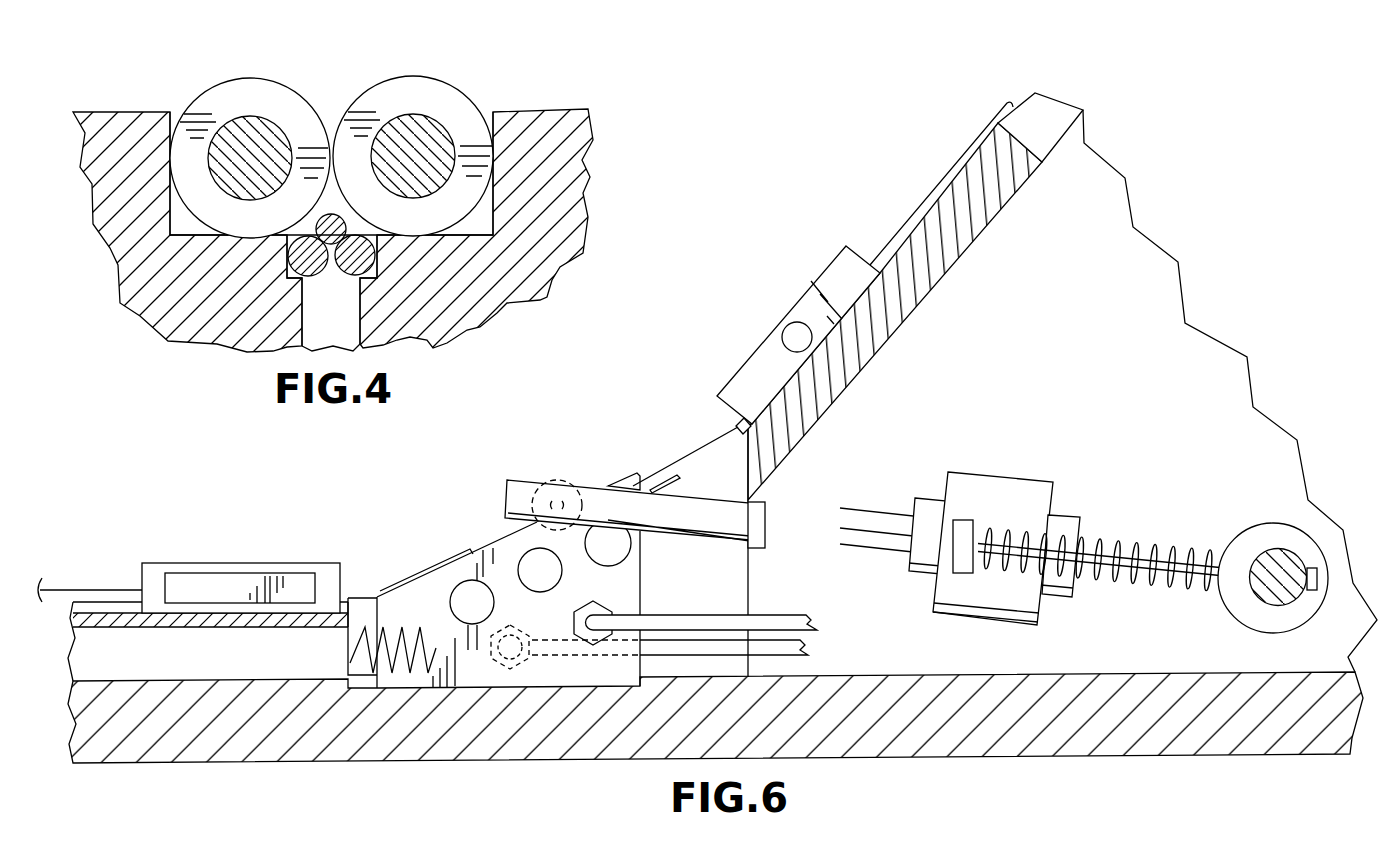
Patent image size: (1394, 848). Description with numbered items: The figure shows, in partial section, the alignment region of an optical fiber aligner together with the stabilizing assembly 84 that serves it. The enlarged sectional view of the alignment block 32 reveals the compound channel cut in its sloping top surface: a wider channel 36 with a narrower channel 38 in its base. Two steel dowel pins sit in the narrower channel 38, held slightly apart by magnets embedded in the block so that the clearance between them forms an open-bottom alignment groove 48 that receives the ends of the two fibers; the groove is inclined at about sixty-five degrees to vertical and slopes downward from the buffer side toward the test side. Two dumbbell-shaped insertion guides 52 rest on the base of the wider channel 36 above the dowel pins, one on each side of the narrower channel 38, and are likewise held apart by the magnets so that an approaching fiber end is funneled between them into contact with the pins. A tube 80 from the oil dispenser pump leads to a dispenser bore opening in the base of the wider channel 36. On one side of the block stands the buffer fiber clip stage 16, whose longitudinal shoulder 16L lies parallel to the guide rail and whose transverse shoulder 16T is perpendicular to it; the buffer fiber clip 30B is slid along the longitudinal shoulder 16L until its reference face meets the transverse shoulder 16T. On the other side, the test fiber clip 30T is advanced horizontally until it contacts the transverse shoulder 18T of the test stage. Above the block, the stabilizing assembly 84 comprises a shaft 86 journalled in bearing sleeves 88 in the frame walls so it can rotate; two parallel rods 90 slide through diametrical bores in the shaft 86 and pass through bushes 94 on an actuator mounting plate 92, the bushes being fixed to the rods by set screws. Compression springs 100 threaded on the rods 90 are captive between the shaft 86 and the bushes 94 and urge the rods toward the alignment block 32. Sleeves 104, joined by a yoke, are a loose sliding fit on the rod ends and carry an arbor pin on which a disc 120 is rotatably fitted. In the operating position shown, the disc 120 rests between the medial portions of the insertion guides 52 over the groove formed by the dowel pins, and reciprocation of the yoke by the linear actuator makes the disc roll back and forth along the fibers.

In FIG. 4, the alignment block 32 is at (562, 101).
In FIG. 4, the wider channel 36 is at (477, 100).
In FIG. 4, the insertion guides 52 is at (205, 75).
In FIG. 4, the narrower channel 38 is at (359, 226).
In FIG. 4, the alignment groove 48 is at (324, 238).
In FIG. 6, the buffer fiber clip stage 16 is at (1038, 100).
In FIG. 6, the longitudinal shoulder 16L is at (938, 154).
In FIG. 6, the transverse shoulder 16T is at (730, 420).
In FIG. 6, the buffer fiber clip 30B is at (814, 266).
In FIG. 6, the transverse shoulder 18T is at (346, 590).
In FIG. 6, the tube 80 is at (762, 604).
In FIG. 6, the sleeves 104 is at (497, 489).
In FIG. 6, the disc 120 is at (557, 472).
In FIG. 6, the test fiber clip 30T is at (262, 552).
In FIG. 6, the stabilizing assembly 84 is at (972, 520).
In FIG. 6, the rods 90 is at (862, 519).
In FIG. 6, the bushes 94 is at (952, 560).
In FIG. 6, the actuator mounting plate 92 is at (950, 489).
In FIG. 6, the compression springs 100 is at (1148, 542).
In FIG. 6, the shaft 86 is at (1265, 530).
In FIG. 6, the bearing sleeves 88 is at (1259, 610).